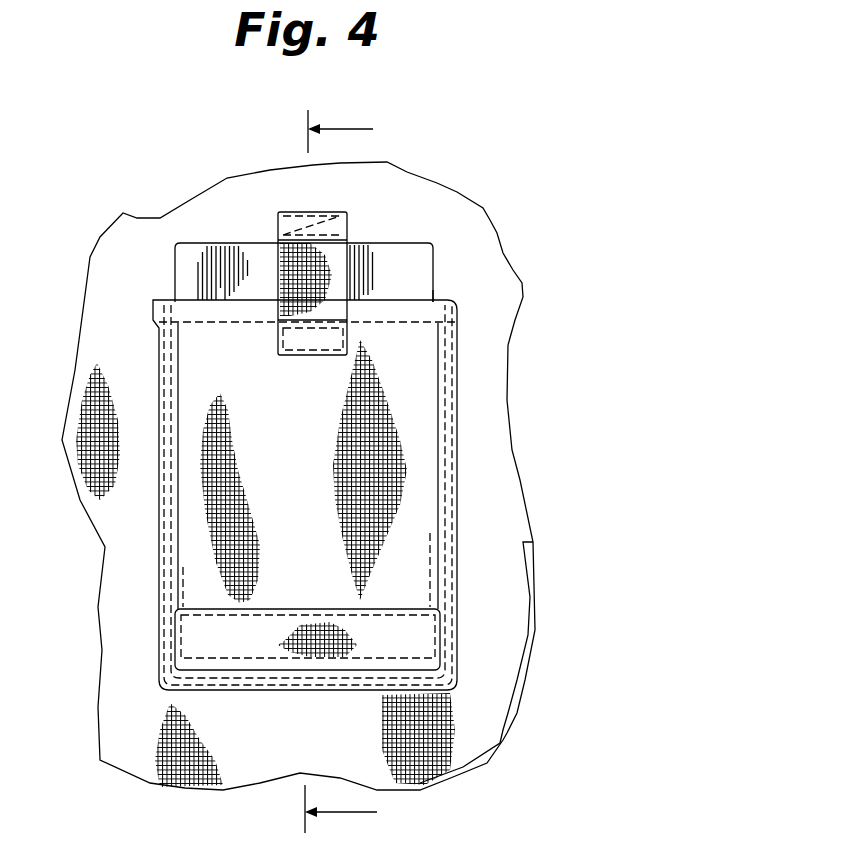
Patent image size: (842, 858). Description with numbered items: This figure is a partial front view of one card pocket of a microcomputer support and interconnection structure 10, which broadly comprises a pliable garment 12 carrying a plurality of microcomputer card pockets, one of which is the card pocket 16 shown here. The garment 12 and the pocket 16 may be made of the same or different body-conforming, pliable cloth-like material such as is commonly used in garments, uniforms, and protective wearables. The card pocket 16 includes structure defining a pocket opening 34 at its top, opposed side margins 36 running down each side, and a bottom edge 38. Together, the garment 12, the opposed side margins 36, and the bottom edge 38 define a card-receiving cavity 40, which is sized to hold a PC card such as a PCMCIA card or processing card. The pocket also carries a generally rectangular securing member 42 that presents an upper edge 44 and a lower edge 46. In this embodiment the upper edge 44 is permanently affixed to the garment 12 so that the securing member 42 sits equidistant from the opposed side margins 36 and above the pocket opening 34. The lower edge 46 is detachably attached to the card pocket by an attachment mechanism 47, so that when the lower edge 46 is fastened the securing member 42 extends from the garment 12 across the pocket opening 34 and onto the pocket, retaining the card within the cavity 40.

The microcomputer support and interconnection structure 10 is at (354, 471).
The pliable garment 12 is at (493, 660).
The microcomputer card pocket 16 is at (478, 375).
The pocket opening 34 is at (347, 337).
The opposed side margins 36 is at (175, 592).
The bottom edge 38 is at (240, 678).
The card-receiving cavity 40 is at (190, 290).
The securing member 42 is at (337, 268).
The upper edge 44 is at (340, 213).
The lower edge 46 is at (347, 355).
The attachment mechanism 47 is at (427, 297).